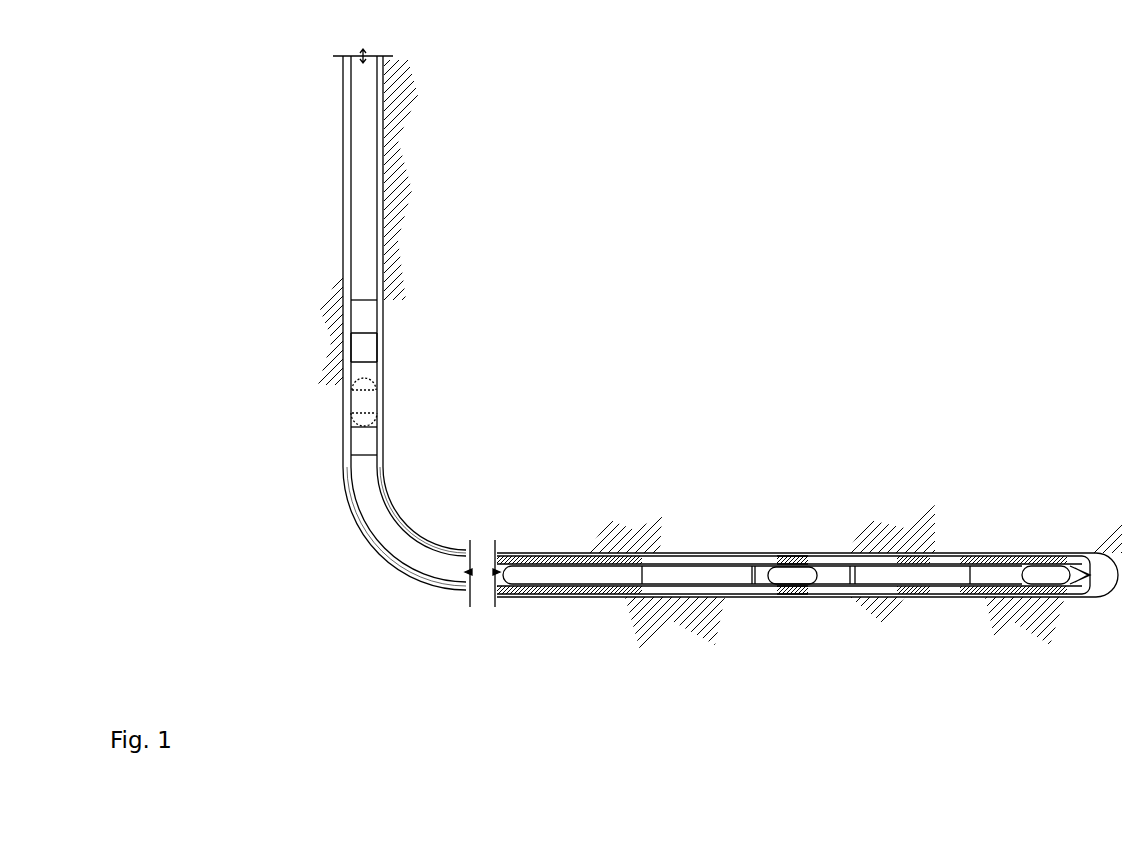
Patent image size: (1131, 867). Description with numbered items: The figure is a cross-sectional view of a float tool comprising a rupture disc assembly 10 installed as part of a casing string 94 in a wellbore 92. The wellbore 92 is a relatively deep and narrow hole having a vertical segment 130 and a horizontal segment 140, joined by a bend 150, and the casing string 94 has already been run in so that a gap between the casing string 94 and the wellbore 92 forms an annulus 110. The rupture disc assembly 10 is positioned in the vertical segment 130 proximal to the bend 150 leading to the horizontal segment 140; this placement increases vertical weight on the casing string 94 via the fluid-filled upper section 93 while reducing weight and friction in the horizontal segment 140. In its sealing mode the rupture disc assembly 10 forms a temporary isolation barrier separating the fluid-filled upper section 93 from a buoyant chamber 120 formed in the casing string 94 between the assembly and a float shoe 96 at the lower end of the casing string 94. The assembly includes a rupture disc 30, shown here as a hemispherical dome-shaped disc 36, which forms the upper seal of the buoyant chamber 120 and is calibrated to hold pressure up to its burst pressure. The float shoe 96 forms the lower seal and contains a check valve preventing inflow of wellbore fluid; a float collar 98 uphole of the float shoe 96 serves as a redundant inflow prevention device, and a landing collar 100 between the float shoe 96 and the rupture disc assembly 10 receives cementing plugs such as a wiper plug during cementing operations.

The rupture disc assembly 10 is at (403, 332).
The rupture disc 30 is at (350, 418).
The hemispherical dome-shaped disc 36 is at (364, 394).
The wellbore 92 is at (385, 188).
The fluid-filled upper section 93 is at (358, 134).
The casing string 94 is at (380, 244).
The float shoe 96 is at (1028, 565).
The float collar 98 is at (790, 556).
The landing collar 100 is at (556, 553).
The annulus 110 is at (385, 257).
The buoyant chamber 120 is at (378, 508).
The vertical segment 130 is at (337, 220).
The horizontal segment 140 is at (777, 598).
The bend 150 is at (370, 571).